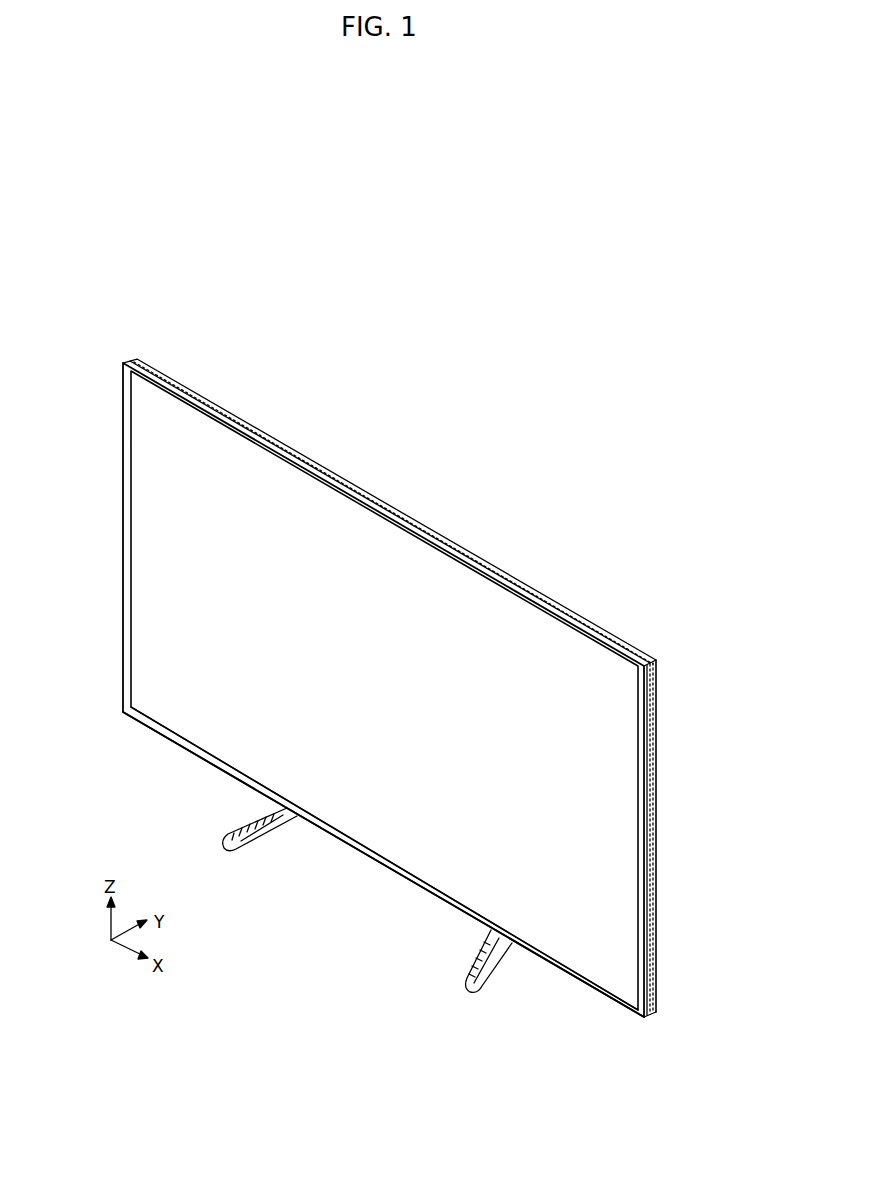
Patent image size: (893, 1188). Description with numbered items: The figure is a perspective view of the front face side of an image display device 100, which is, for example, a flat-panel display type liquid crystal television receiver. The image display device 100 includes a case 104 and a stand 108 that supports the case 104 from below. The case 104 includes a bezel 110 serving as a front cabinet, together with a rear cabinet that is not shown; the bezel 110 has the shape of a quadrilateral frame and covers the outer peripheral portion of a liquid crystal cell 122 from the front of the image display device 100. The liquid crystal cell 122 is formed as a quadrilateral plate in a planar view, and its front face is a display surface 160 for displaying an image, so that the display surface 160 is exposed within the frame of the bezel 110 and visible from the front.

The image display device 100 is at (400, 697).
The case 104 is at (657, 727).
The stand 108 is at (497, 957).
The bezel 110 is at (656, 782).
The liquid crystal cell 122 is at (417, 820).
The display surface 160 is at (171, 577).